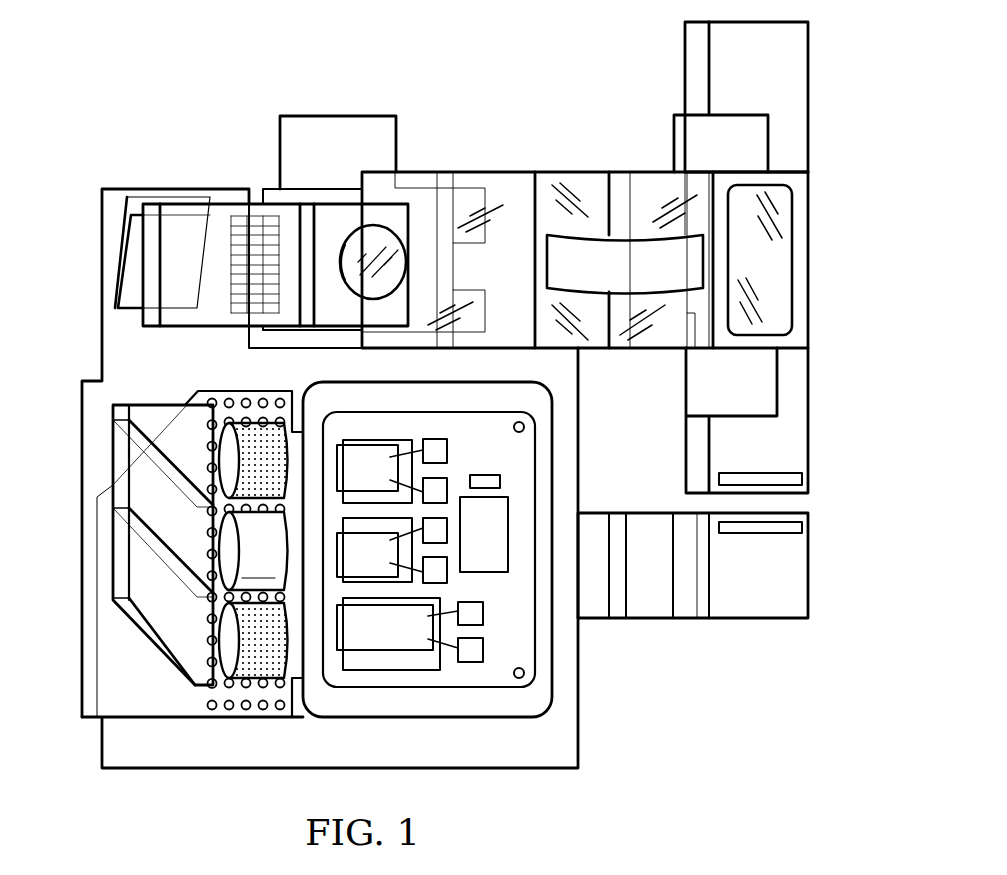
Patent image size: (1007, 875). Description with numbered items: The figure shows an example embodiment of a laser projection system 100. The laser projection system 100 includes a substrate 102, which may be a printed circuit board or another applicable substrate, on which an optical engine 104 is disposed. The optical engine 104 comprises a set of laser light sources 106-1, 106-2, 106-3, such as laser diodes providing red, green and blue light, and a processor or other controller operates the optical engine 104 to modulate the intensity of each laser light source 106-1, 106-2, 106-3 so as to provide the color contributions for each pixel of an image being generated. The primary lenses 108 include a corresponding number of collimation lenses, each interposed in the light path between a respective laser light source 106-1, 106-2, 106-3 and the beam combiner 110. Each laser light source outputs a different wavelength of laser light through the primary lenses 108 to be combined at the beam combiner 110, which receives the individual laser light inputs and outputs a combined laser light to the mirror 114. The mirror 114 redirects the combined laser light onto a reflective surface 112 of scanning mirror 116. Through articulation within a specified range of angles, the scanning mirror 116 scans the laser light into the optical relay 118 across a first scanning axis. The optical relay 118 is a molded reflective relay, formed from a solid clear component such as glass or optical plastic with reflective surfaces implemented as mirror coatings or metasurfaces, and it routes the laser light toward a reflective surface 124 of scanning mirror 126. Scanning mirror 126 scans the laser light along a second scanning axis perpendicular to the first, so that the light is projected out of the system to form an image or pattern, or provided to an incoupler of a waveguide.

The laser projection system 100 is at (415, 63).
The substrate 102 is at (570, 690).
The optical engine 104 is at (488, 598).
The laser light source 106-1 is at (398, 633).
The laser light source 106-2 is at (380, 548).
The laser light source 106-3 is at (382, 465).
The primary lenses 108 is at (262, 684).
The beam combiner 110 is at (142, 653).
The reflective surface 112 is at (358, 247).
The mirror 114 is at (135, 273).
The scanning mirror 116 is at (272, 188).
The optical relay 118 is at (545, 152).
The reflective surface 124 is at (773, 253).
The scanning mirror 126 is at (685, 61).